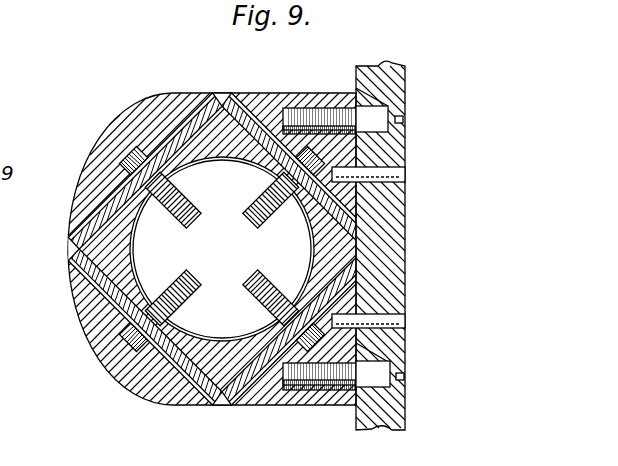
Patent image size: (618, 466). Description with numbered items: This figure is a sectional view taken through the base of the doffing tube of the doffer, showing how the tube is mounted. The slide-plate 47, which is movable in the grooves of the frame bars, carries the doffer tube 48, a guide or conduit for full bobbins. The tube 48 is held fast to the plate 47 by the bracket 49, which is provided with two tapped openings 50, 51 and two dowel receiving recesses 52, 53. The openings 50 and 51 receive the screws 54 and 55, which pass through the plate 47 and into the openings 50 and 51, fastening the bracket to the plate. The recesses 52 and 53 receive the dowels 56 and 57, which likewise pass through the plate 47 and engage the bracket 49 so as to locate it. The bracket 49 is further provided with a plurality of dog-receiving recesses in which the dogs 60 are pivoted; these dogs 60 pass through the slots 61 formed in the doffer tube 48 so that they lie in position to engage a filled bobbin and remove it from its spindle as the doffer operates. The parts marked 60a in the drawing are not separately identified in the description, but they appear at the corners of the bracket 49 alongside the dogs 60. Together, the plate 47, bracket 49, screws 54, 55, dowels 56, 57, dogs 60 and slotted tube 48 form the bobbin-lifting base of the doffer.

The slide-plate 47 is at (405, 215).
The doffer tube 48 is at (198, 333).
The bracket 49 is at (278, 80).
The tapped opening 50 is at (325, 107).
The tapped opening 51 is at (317, 404).
The dowel receiving recess 52 is at (356, 157).
The dowel receiving recess 53 is at (356, 300).
The screw 54 is at (373, 110).
The screw 55 is at (397, 388).
The dowel 56 is at (393, 175).
The dowel 57 is at (393, 322).
The dog 60 is at (250, 226).
The wedge keys 60a is at (188, 117).
The slot 61 is at (157, 293).